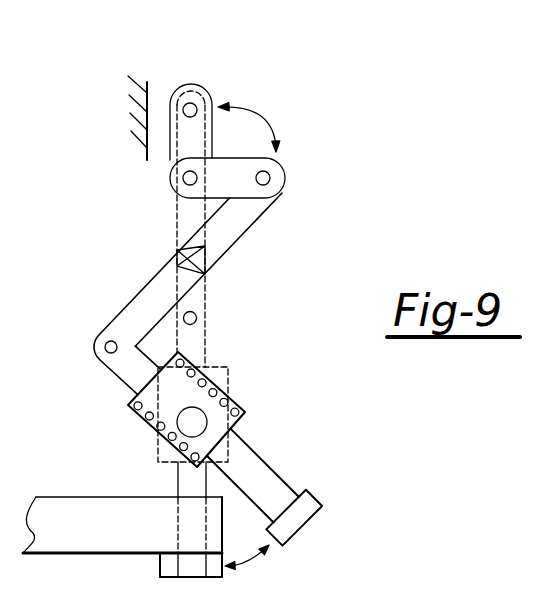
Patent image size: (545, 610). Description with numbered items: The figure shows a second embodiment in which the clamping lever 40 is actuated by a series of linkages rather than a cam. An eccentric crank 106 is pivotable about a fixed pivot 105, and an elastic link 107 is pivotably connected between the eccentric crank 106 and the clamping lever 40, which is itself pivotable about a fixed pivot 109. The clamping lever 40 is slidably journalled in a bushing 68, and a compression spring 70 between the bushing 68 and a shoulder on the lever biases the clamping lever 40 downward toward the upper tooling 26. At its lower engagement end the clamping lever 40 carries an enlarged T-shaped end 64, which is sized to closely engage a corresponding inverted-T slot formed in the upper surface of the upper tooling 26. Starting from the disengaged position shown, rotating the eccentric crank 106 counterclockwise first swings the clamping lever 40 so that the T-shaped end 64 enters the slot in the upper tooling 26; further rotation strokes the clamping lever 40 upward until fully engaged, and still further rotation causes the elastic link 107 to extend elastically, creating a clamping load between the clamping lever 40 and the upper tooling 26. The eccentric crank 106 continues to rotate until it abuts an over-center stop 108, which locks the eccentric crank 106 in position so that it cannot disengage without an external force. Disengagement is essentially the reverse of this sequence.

The upper tooling 26 is at (105, 543).
The clamping lever 40 is at (262, 473).
The T-shaped end 64 is at (322, 494).
The bushing 68 is at (232, 395).
The compression spring 70 is at (157, 428).
The fixed pivot 105 is at (187, 181).
The eccentric crank 106 is at (238, 157).
The elastic link 107 is at (240, 228).
The over-center stop 108 is at (147, 93).
The fixed pivot 109 is at (203, 423).